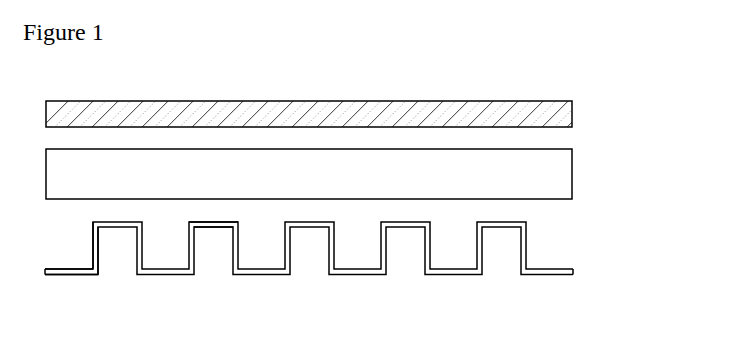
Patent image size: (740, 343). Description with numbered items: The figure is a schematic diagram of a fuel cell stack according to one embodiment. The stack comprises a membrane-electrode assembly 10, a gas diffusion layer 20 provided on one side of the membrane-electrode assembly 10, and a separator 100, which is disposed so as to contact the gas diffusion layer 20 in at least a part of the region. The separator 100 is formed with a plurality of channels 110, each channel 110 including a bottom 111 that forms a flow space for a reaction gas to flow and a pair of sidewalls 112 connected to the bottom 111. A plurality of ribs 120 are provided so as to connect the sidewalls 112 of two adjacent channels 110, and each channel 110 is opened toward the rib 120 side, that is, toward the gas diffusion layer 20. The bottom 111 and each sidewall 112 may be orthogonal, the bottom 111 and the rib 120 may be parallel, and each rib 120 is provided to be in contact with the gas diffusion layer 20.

The membrane-electrode assembly 10 is at (572, 114).
The gas diffusion layer 20 is at (572, 173).
The separator 100 is at (356, 279).
The channel 110 is at (100, 279).
The bottom 111 is at (77, 276).
The sidewall 112 is at (122, 266).
The rib 120 is at (212, 228).